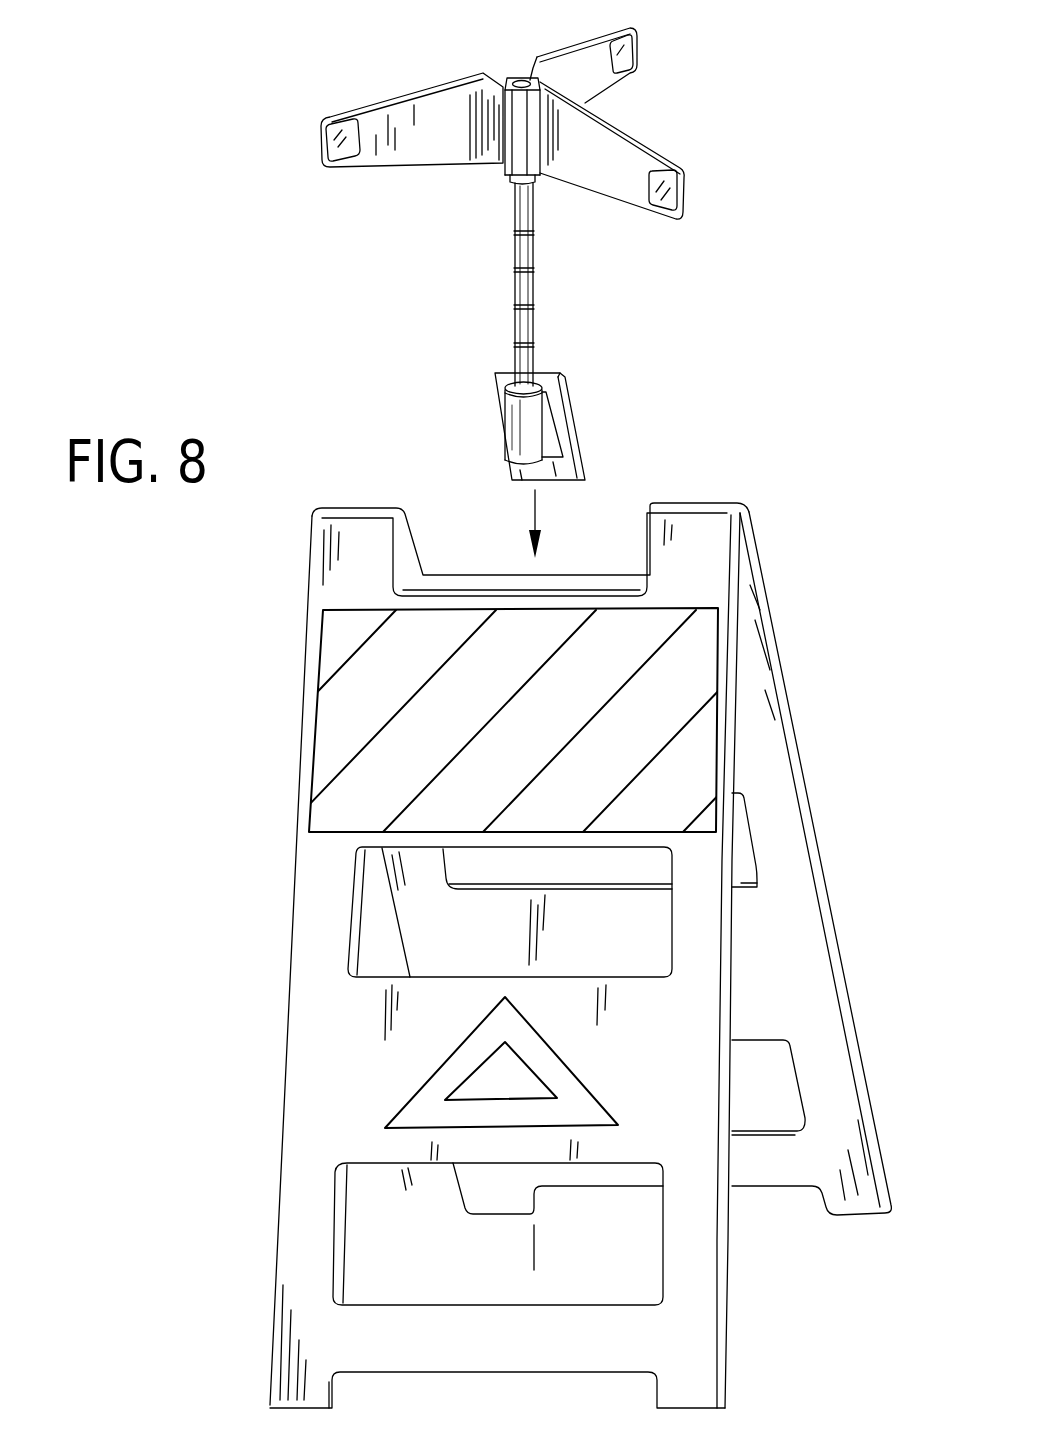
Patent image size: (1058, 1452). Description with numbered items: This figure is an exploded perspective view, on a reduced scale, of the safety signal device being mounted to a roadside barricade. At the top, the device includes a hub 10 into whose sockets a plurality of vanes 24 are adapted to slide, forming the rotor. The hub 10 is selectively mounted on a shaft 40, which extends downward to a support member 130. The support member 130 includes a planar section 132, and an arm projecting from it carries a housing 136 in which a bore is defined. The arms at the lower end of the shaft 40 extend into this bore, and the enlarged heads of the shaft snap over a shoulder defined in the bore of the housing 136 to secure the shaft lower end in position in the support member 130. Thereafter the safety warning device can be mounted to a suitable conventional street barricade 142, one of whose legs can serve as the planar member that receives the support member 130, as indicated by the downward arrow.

The hub 10 is at (526, 129).
The vanes 24 is at (456, 173).
The shaft 40 is at (507, 257).
The support member 130 is at (561, 426).
The planar section 132 is at (560, 468).
The housing 136 is at (520, 430).
The street barricade 142 is at (284, 944).